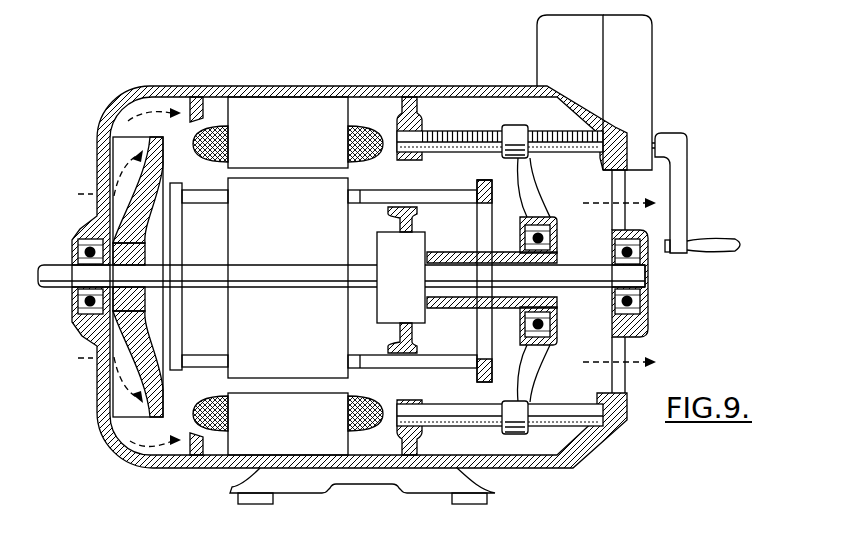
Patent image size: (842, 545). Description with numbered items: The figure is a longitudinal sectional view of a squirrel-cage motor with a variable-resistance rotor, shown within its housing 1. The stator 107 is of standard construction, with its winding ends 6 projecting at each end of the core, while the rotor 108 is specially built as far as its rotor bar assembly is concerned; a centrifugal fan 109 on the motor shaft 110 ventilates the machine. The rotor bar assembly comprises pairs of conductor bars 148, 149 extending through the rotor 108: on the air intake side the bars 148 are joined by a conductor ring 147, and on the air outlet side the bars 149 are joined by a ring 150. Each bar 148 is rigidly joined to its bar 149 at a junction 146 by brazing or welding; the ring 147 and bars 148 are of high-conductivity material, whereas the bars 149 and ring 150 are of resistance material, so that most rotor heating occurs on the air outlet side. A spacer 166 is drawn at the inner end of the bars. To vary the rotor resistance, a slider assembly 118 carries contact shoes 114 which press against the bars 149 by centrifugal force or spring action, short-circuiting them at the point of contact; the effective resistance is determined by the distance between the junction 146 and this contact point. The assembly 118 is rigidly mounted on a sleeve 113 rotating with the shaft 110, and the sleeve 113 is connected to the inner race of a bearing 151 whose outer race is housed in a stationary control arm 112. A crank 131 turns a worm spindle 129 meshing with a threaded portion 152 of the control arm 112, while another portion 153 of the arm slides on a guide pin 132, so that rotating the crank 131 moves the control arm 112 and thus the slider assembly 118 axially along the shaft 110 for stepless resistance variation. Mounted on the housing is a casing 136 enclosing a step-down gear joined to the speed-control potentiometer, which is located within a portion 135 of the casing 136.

The motor housing 1 is at (213, 86).
The stator winding end 6 is at (362, 140).
The stator 107 is at (270, 139).
The rotor 108 is at (271, 284).
The centrifugal fan 109 is at (164, 388).
The motor shaft 110 is at (48, 286).
The control arm 112 is at (541, 200).
The sleeve 113 is at (502, 252).
The contact shoe 114 is at (413, 221).
The slider assembly 118 is at (379, 322).
The worm spindle 129 is at (468, 131).
The crank 131 is at (683, 159).
The guide pin 132 is at (566, 412).
The portion of casing 135 is at (538, 47).
The casing 136 is at (645, 60).
The junction 146 is at (355, 371).
The conductor ring 147 is at (181, 228).
The conductor bar 148 is at (212, 190).
The conductor bar 149 is at (428, 198).
The ring 150 is at (485, 182).
The bearing 151 is at (557, 224).
The threaded portion 152 is at (522, 126).
The portion of control arm 153 is at (509, 434).
The spacer 166 is at (353, 191).